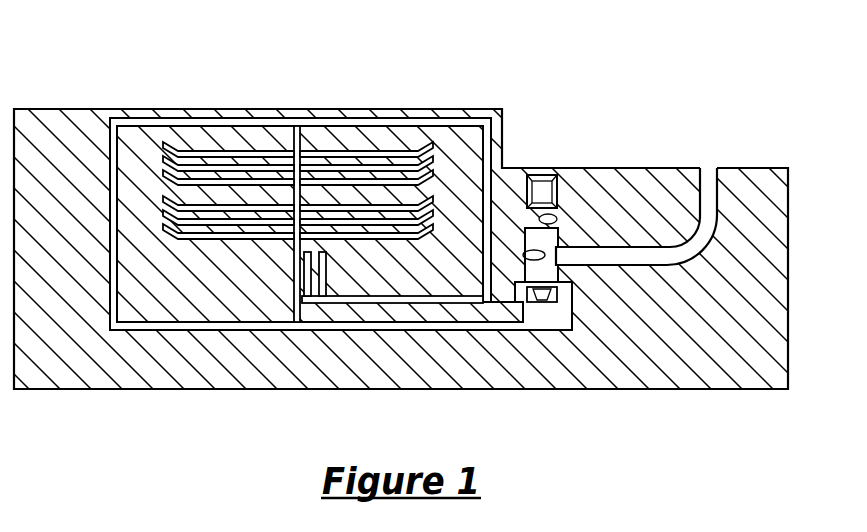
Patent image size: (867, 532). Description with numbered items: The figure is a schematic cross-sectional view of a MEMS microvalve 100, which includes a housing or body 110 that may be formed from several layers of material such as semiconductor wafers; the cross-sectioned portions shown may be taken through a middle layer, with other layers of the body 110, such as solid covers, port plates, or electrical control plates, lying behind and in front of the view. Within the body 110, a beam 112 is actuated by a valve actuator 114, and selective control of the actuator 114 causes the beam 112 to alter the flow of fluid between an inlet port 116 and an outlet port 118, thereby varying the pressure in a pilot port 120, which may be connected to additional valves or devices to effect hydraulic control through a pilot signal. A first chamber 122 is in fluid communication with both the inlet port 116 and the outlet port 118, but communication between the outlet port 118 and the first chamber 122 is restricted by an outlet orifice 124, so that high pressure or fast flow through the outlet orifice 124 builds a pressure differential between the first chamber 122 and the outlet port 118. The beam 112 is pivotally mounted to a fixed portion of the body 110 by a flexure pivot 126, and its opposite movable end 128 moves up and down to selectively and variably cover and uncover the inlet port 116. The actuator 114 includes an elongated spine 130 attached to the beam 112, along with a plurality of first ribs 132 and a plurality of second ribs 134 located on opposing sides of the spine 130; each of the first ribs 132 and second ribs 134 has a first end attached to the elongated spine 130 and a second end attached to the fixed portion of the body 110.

The MEMS microvalve 100 is at (166, 50).
The body 110 is at (95, 362).
The beam 112 is at (460, 320).
The valve actuator 114 is at (252, 267).
The inlet port 116 is at (553, 282).
The outlet port 118 is at (548, 190).
The pilot port 120 is at (712, 178).
The first chamber 122 is at (525, 268).
The outlet orifice 124 is at (555, 219).
The flexure pivot 126 is at (318, 282).
The movable end 128 is at (549, 312).
The elongated spine 130 is at (300, 126).
The first ribs 132 is at (163, 226).
The second ribs 134 is at (436, 231).